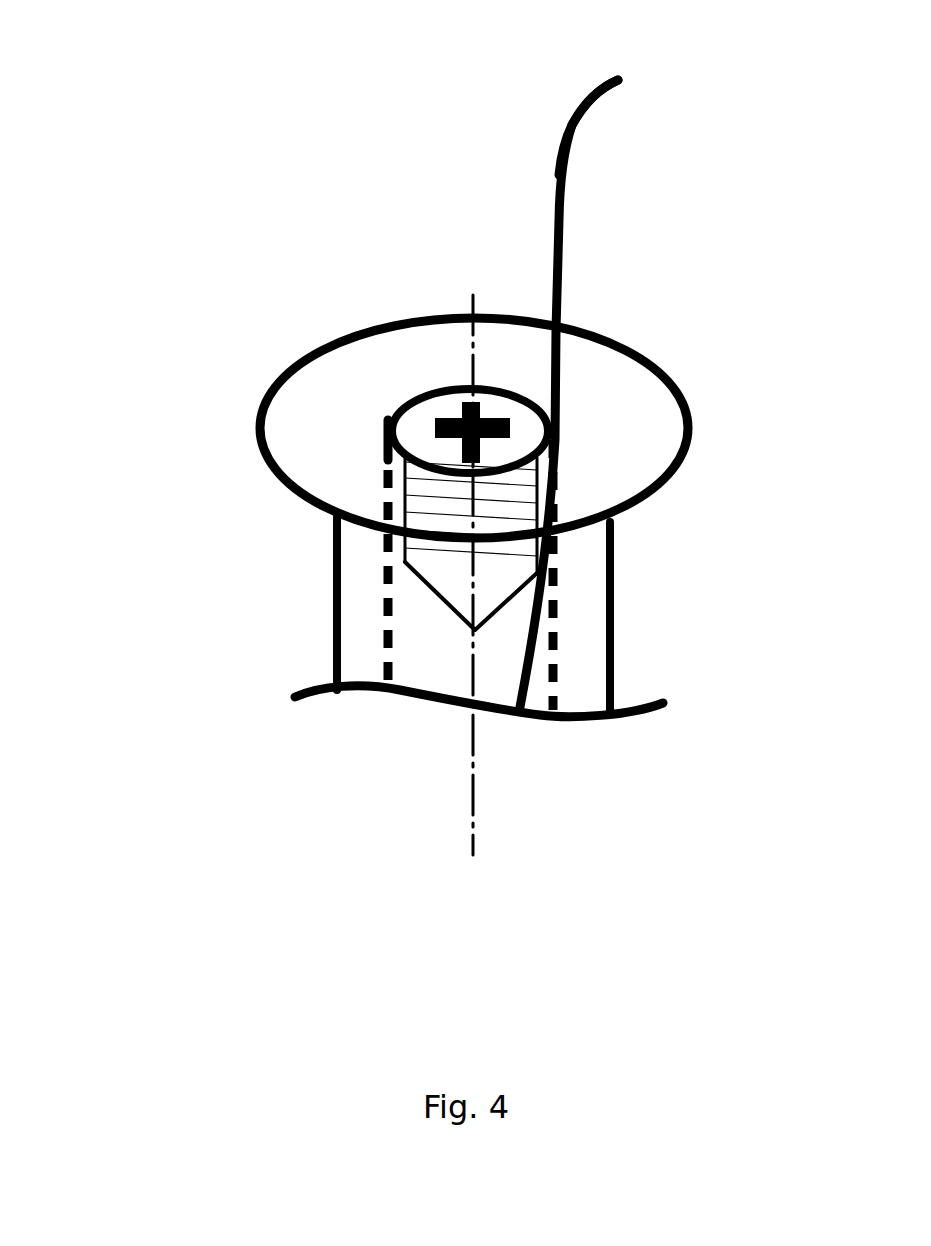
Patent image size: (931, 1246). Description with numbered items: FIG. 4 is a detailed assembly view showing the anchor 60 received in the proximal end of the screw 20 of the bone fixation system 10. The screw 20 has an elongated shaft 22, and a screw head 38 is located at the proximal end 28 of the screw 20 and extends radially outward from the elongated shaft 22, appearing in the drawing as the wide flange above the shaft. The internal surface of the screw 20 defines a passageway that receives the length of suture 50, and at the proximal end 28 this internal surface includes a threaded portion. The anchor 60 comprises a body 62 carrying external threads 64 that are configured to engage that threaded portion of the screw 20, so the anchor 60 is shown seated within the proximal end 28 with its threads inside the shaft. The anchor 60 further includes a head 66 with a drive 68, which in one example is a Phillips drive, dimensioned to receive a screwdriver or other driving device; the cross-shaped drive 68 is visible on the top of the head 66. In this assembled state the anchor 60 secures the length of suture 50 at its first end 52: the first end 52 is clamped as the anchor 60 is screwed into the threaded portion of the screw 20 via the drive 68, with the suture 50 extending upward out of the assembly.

The bone fixation system 10 is at (102, 333).
The screw 20 is at (683, 630).
The elongated shaft 22 is at (325, 630).
The proximal end 28 is at (770, 477).
The screw head 38 is at (668, 487).
The length of suture 50 is at (598, 100).
The first end 52 is at (552, 98).
The anchor 60 is at (355, 435).
The body 62 is at (405, 462).
The external threads 64 is at (405, 512).
The head 66 is at (422, 427).
The drive 68 is at (465, 400).